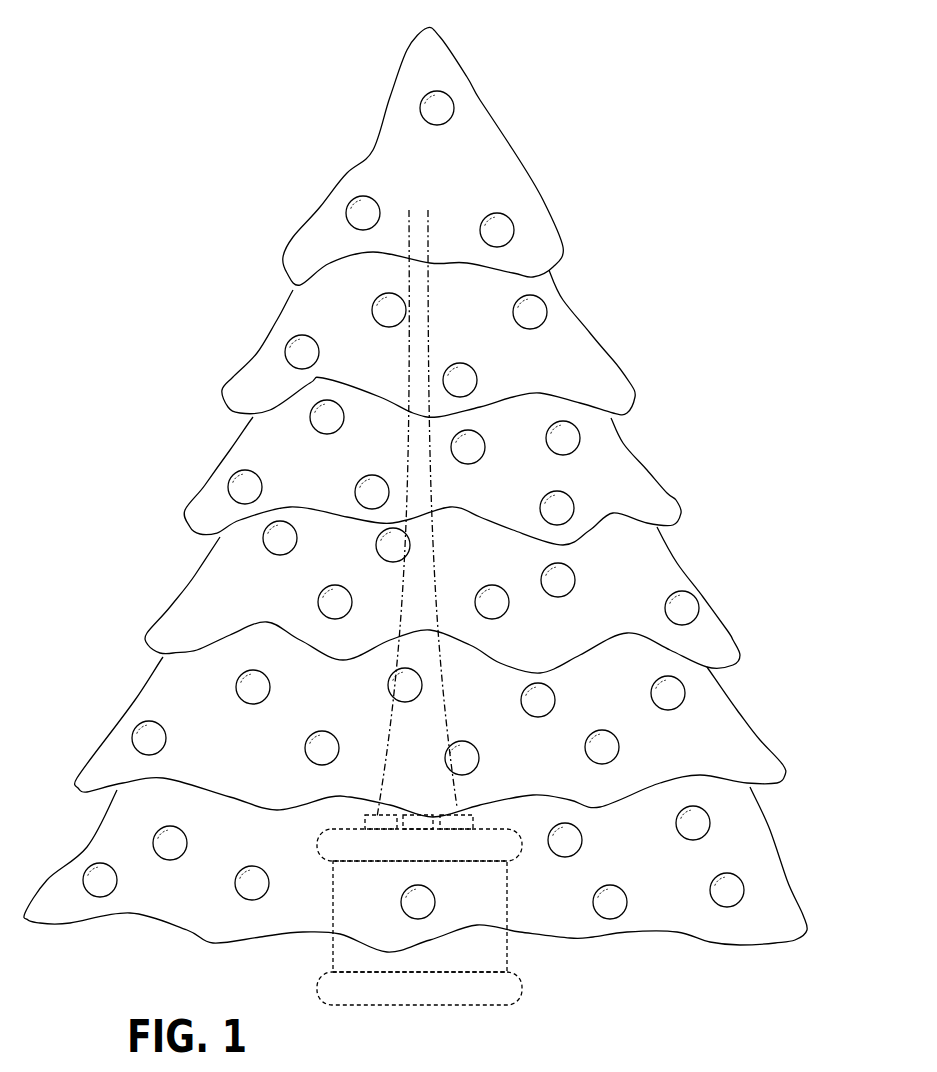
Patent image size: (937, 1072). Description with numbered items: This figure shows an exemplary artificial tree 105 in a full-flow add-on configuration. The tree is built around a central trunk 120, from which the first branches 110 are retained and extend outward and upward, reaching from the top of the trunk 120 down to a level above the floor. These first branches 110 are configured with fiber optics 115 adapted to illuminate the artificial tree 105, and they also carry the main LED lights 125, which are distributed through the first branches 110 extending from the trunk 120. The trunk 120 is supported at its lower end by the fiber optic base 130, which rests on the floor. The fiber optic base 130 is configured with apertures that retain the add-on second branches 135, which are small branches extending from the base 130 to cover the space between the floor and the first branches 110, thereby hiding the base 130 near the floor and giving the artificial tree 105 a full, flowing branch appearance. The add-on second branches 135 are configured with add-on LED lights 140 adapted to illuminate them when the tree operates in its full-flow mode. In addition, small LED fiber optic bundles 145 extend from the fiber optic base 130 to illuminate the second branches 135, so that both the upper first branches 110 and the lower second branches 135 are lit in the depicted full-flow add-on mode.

The artificial tree 105 is at (210, 117).
The first branches 110 is at (550, 291).
The fiber optics 115 is at (623, 368).
The trunk 120 is at (402, 581).
The main LED lights 125 is at (452, 94).
The fiber optic base 130 is at (495, 952).
The add-on second branches 135 is at (780, 910).
The add-on LED lights 140 is at (237, 684).
The small LED fiber optic bundles 145 is at (380, 813).